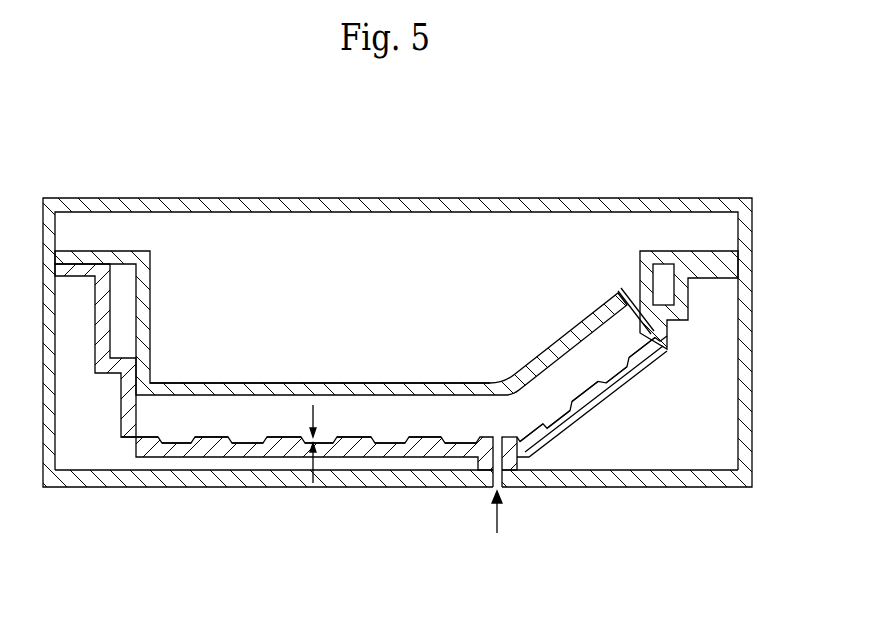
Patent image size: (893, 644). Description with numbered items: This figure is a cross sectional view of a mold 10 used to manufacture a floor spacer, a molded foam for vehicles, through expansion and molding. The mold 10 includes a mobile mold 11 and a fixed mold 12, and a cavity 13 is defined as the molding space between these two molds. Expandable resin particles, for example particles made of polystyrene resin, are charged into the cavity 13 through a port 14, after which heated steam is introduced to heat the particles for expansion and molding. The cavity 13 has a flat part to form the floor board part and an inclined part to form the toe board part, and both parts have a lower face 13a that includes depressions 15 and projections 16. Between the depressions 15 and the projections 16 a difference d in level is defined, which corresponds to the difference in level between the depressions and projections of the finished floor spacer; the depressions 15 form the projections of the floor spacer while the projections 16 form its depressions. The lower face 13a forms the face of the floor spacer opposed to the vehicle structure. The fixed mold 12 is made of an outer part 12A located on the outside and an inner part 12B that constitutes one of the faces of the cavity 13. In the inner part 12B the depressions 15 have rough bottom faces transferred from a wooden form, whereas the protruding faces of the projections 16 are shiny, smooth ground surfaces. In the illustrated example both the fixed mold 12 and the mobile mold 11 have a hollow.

The mold 10 is at (175, 146).
The mobile mold 11 is at (575, 233).
The fixed mold 12 is at (397, 436).
The outer part 12A is at (125, 484).
The inner part 12B is at (77, 558).
The cavity 13 is at (430, 425).
The lower face 13a is at (363, 440).
The port 14 is at (483, 487).
The depressions 15 is at (176, 440).
The projections 16 is at (220, 438).
The difference in level d is at (313, 483).